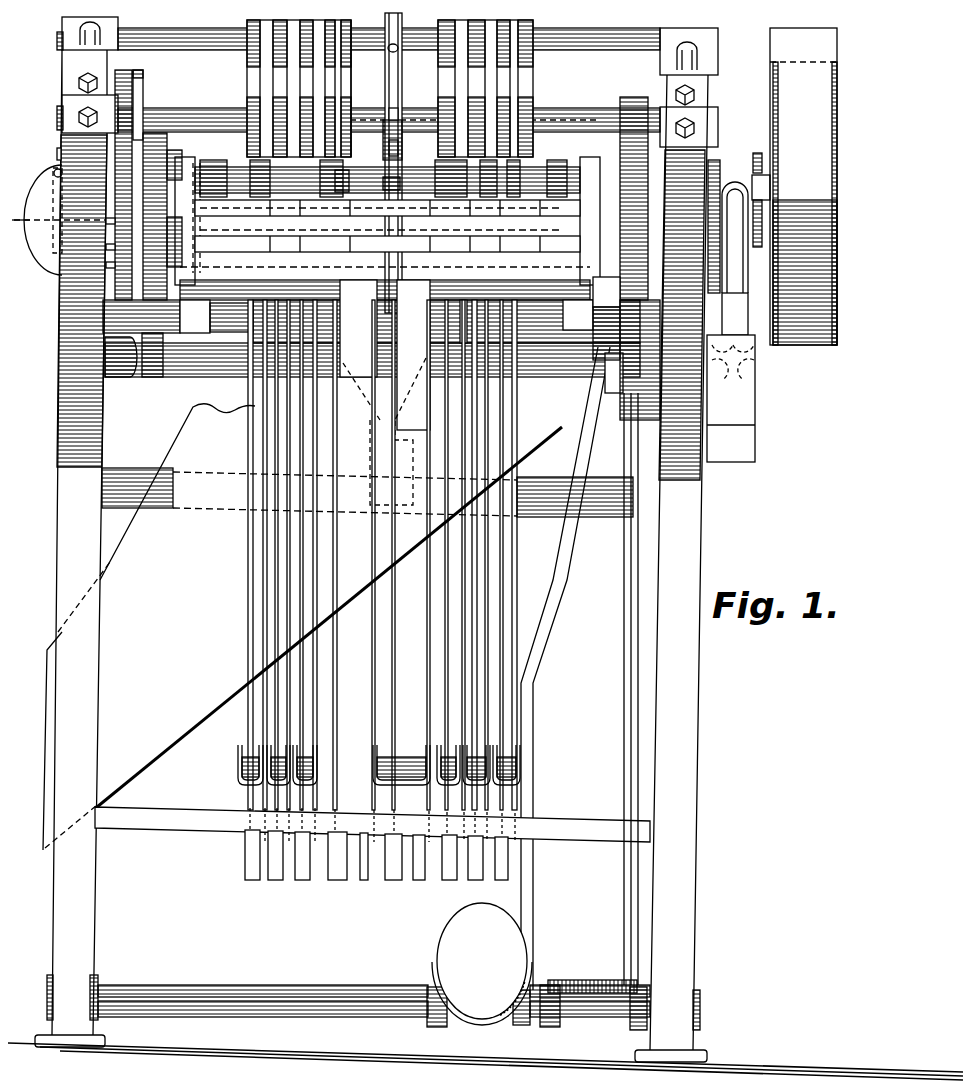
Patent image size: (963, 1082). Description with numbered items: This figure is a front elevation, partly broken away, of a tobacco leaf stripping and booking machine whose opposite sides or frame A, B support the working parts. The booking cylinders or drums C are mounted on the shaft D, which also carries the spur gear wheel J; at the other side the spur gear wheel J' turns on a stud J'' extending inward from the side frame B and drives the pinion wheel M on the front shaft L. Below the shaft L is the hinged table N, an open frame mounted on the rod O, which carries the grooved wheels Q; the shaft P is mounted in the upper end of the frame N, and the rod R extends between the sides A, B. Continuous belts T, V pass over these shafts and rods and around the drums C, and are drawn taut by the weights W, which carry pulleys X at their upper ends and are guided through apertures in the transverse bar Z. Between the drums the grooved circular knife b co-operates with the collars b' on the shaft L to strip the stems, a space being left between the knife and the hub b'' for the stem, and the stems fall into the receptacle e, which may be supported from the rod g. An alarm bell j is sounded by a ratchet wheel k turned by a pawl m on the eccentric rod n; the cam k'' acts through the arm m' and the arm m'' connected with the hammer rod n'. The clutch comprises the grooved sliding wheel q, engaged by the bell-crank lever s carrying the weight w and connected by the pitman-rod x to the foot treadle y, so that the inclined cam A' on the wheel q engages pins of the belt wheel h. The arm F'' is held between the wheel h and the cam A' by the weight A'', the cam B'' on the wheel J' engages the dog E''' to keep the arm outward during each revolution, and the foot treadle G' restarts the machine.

The side frame A is at (76, 532).
The side frame B is at (676, 545).
The rod R is at (200, 48).
The shaft L is at (358, 109).
The pawl m is at (127, 173).
The eccentric rod n is at (147, 105).
The shaft D is at (149, 216).
The spur gear wheel J is at (154, 265).
The rod g is at (121, 366).
The bell j is at (62, 220).
The hammer rod n' is at (49, 180).
The cam k'' is at (84, 151).
The arm m' is at (95, 220).
The arm m'' is at (95, 246).
The ratchet wheel k is at (95, 268).
The continuous belt V is at (390, 349).
The booking cylinder C is at (375, 78).
The hub b'' is at (405, 132).
The collar b' is at (392, 110).
The grooved circular knife b is at (405, 150).
The shaft P is at (340, 170).
The rod O is at (371, 338).
The grooved wheel Q is at (391, 233).
The hinged table N is at (386, 392).
The continuous belt T is at (248, 605).
The receptacle e is at (302, 627).
The pitman-rod x is at (565, 668).
The pulley X is at (379, 758).
The transverse bar Z is at (372, 814).
The weight W is at (448, 876).
The foot treadle y is at (482, 964).
The foot treadle G' is at (592, 976).
The bell-crank lever S is at (614, 385).
The pinion wheel M is at (634, 189).
The spur gear wheel J' is at (606, 292).
The cam B'' is at (643, 307).
The dog E''' is at (658, 348).
The stud J'' is at (689, 226).
The arm F'' is at (703, 451).
The weight A'' is at (749, 398).
The weight w is at (731, 437).
The inclined cam A' is at (798, 186).
The belt wheel h is at (770, 128).
The grooved sliding wheel q is at (749, 171).